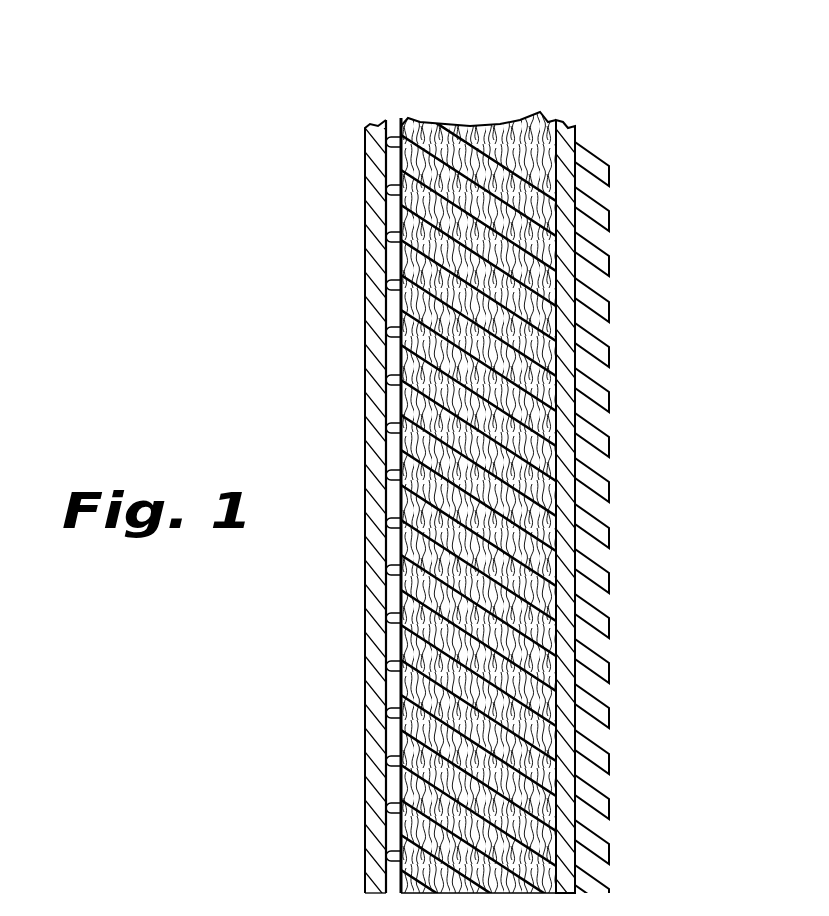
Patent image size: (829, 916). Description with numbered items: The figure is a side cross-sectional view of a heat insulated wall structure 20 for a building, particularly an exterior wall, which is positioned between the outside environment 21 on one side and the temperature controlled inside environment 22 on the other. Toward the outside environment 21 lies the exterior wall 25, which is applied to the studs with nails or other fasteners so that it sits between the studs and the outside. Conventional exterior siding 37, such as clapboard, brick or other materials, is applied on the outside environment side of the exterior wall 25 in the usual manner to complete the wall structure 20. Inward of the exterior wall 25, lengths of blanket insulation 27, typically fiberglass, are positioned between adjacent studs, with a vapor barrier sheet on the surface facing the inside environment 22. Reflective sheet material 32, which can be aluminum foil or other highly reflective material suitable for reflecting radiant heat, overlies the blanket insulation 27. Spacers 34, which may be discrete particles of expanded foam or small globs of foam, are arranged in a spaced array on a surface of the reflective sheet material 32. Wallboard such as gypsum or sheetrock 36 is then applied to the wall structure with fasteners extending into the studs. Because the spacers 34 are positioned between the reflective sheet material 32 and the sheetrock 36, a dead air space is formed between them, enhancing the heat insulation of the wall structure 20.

The wall structure 20 is at (510, 110).
The outside environment 21 is at (651, 301).
The inside environment 22 is at (276, 301).
The exterior wall 25 is at (575, 519).
The blanket insulation 27 is at (420, 503).
The reflective sheet material 32 is at (394, 598).
The spacers 34 is at (388, 476).
The sheetrock 36 is at (375, 694).
The exterior siding 37 is at (610, 490).